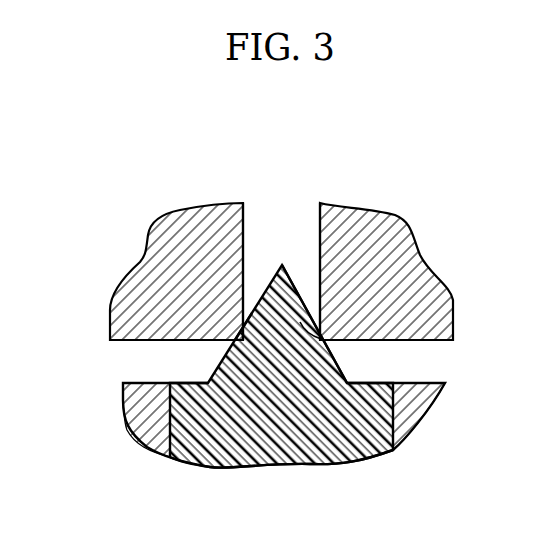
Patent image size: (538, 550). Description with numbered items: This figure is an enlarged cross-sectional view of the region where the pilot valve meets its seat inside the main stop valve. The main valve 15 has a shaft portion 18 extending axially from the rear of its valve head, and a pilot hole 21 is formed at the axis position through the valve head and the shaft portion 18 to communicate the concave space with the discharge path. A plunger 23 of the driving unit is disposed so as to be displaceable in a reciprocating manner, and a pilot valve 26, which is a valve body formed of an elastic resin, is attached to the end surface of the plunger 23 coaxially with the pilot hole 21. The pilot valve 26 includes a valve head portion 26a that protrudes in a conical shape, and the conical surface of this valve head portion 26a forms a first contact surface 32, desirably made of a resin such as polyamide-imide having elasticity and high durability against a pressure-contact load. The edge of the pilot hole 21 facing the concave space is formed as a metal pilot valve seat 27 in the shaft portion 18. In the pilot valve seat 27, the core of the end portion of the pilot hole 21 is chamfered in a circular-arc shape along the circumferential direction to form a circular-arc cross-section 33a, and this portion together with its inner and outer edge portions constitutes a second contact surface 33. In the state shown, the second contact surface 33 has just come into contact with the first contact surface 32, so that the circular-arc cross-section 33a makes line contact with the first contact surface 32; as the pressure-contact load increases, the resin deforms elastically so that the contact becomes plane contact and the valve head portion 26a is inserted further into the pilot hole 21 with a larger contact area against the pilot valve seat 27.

The main valve 15 is at (156, 256).
The shaft portion 18 is at (148, 280).
The pilot hole 21 is at (253, 222).
The plunger 23 is at (412, 405).
The pilot valve 26 is at (310, 423).
The valve head portion 26a is at (318, 366).
The pilot valve seat 27 is at (243, 335).
The first contact surface 32 is at (337, 333).
The second contact surface 33 is at (237, 343).
The circular-arc cross-section 33a is at (300, 322).